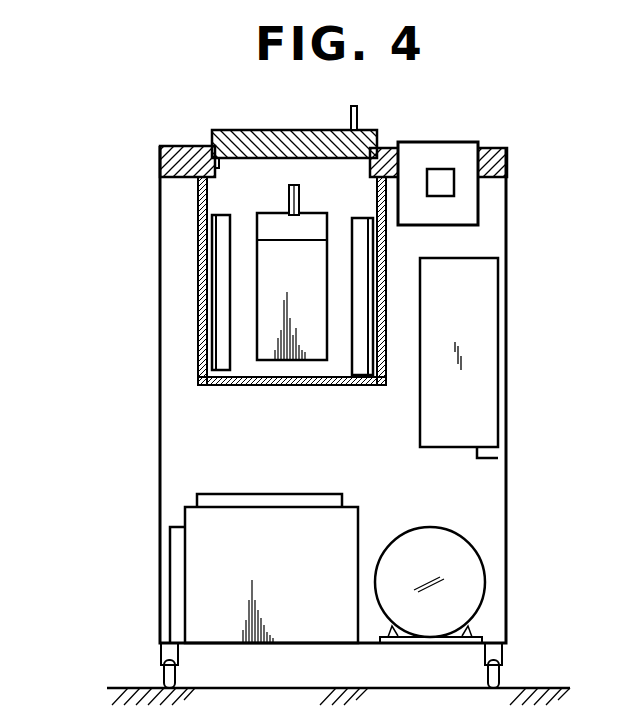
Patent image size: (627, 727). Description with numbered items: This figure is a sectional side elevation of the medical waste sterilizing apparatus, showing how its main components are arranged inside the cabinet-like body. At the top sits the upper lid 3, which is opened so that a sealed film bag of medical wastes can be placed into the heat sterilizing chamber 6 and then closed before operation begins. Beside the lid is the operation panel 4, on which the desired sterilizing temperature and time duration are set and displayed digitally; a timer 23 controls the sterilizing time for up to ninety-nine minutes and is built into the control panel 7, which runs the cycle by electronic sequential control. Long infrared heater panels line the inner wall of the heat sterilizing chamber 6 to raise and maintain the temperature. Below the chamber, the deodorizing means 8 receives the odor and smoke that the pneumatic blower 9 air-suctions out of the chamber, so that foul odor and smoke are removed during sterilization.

The upper lid 3 is at (378, 130).
The operation panel 4 is at (458, 142).
The timer 23 is at (450, 188).
The heat sterilizing chamber 6 is at (243, 196).
The control panel 7 is at (480, 373).
The deodorizing means 8 is at (190, 633).
The pneumatic blower 9 is at (470, 580).